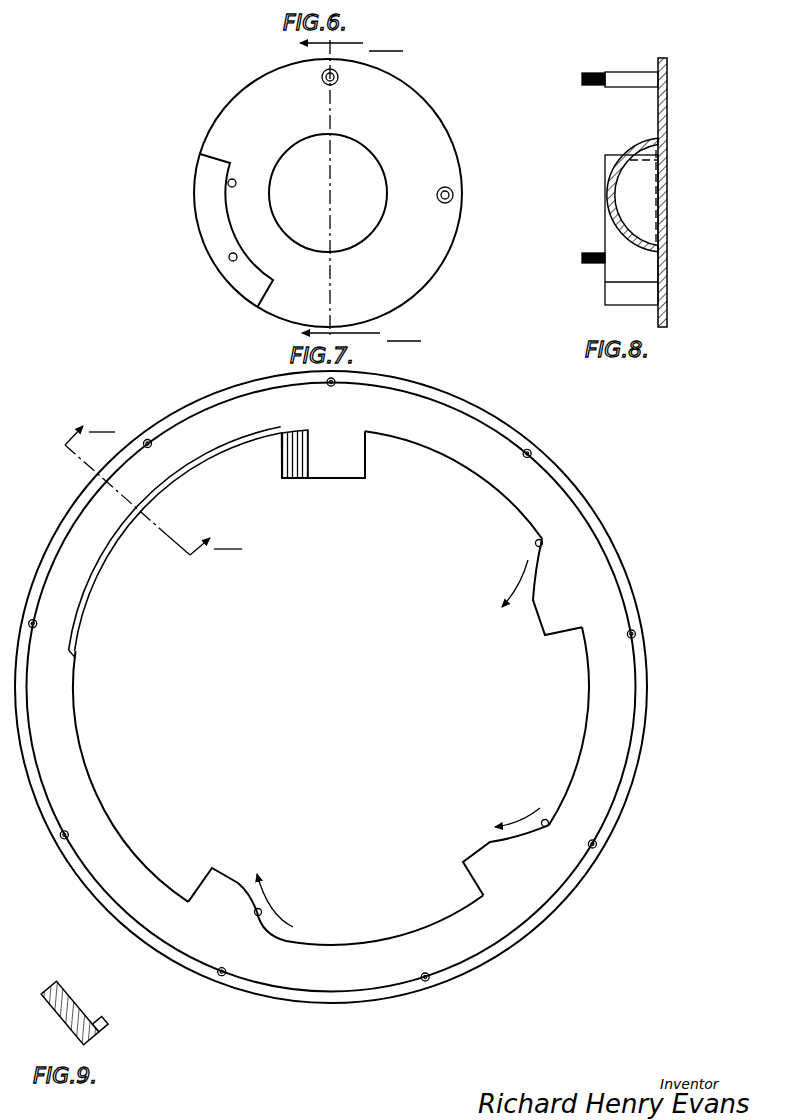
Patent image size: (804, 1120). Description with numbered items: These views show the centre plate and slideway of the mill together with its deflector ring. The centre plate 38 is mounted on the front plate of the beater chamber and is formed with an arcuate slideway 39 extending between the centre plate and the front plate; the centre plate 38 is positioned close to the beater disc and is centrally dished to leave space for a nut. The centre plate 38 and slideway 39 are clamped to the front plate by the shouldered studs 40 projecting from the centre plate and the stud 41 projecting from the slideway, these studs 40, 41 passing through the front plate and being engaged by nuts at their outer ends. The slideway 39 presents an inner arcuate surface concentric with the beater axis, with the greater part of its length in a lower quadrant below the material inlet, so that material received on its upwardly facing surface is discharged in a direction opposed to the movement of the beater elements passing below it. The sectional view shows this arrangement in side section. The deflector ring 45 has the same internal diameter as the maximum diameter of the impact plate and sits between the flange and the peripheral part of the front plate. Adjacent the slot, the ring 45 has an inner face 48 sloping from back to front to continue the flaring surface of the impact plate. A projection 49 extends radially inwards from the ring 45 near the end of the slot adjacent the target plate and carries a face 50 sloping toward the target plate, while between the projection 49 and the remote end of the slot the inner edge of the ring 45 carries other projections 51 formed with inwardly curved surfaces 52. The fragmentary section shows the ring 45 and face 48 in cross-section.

In FIG. 6, the centre plate 38 is at (395, 125).
In FIG. 8, the centre plate 38 is at (668, 118).
In FIG. 6, the arcuate slideway 39 is at (228, 183).
In FIG. 8, the arcuate slideway 39 is at (620, 247).
In FIG. 6, the shouldered studs 40 is at (340, 78).
In FIG. 8, the shouldered studs 40 is at (590, 88).
In FIG. 6, the stud 41 is at (229, 259).
In FIG. 8, the stud 41 is at (593, 264).
In FIG. 7, the ring 45 is at (598, 797).
In FIG. 9, the ring 45 is at (82, 1002).
In FIG. 7, the inner face 48 is at (253, 437).
In FIG. 9, the inner face 48 is at (103, 1040).
In FIG. 7, the projection 49 is at (345, 456).
In FIG. 7, the face 50 is at (298, 457).
In FIG. 7, the other projections 51 is at (547, 607).
In FIG. 7, the inwardly curved surfaces 52 is at (542, 543).